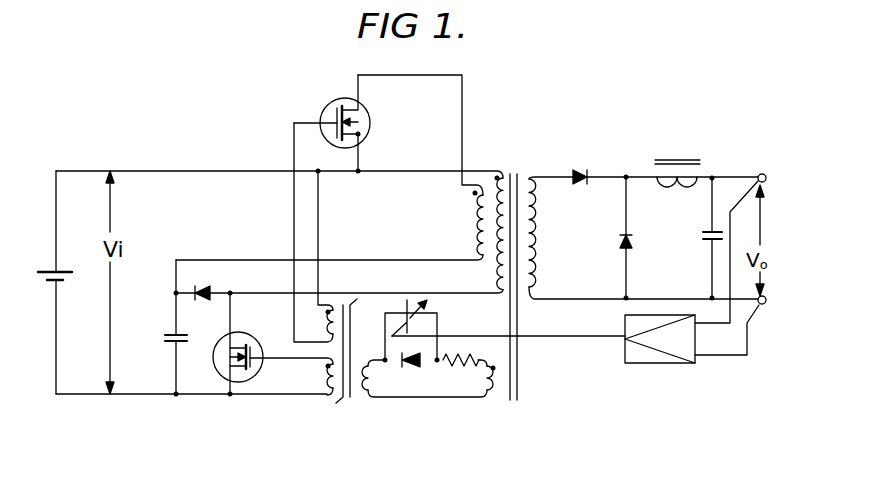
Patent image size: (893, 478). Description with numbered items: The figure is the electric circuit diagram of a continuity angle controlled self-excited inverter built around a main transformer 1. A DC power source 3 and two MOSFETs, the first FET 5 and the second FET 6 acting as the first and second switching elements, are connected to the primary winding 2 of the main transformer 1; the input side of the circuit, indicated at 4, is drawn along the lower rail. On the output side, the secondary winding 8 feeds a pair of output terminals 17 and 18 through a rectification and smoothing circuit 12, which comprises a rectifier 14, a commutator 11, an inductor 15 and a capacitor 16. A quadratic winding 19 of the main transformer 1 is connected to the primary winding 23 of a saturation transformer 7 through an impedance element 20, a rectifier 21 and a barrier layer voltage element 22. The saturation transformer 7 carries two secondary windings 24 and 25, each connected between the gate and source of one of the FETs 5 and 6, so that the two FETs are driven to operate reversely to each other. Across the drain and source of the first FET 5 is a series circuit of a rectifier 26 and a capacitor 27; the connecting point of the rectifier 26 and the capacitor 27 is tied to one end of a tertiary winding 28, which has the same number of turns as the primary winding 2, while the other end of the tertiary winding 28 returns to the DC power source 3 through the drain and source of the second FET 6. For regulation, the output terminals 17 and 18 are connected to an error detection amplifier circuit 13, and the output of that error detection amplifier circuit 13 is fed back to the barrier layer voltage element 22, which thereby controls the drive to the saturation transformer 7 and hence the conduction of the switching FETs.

The main transformer 1 is at (515, 173).
The primary winding 2 is at (498, 173).
The DC power source 3 is at (67, 279).
The input terminals 4 is at (156, 397).
The first FET 5 is at (241, 381).
The second FET 6 is at (330, 106).
The saturation transformer 7 is at (362, 452).
The secondary winding 8 is at (544, 233).
The commutator 11 is at (632, 241).
The rectification and smoothing circuit 12 is at (673, 161).
The error detection amplifier circuit 13 is at (657, 363).
The rectifier 14 is at (578, 171).
The inductor 15 is at (697, 176).
The capacitor 16 is at (701, 235).
The output terminal 17 is at (761, 174).
The output terminal 18 is at (761, 305).
The quadratic winding 19 is at (490, 398).
The impedance element 20 is at (458, 368).
The rectifier 21 is at (411, 368).
The barrier layer voltage element 22 is at (410, 323).
The primary winding 23 is at (368, 392).
The secondary winding 24 is at (330, 389).
The secondary winding 25 is at (337, 287).
The rectifier 26 is at (206, 283).
The capacitor 27 is at (165, 338).
The tertiary winding 28 is at (470, 223).